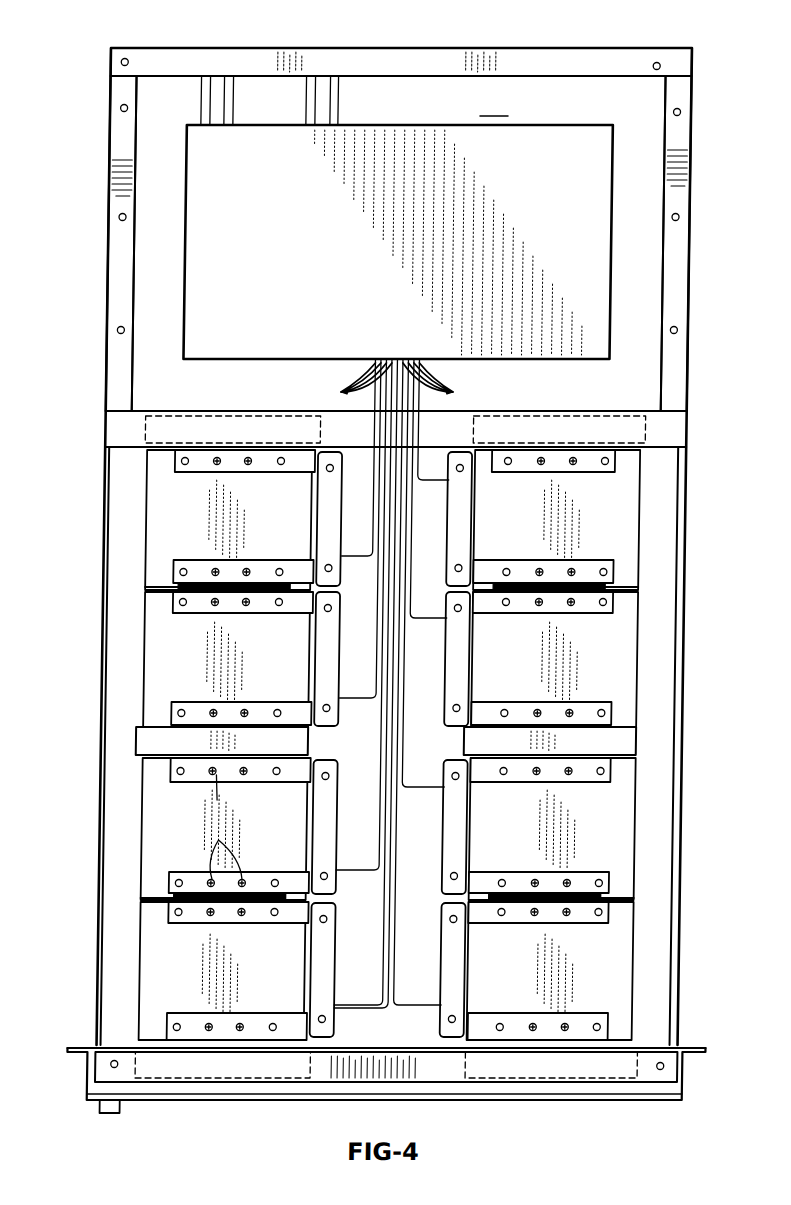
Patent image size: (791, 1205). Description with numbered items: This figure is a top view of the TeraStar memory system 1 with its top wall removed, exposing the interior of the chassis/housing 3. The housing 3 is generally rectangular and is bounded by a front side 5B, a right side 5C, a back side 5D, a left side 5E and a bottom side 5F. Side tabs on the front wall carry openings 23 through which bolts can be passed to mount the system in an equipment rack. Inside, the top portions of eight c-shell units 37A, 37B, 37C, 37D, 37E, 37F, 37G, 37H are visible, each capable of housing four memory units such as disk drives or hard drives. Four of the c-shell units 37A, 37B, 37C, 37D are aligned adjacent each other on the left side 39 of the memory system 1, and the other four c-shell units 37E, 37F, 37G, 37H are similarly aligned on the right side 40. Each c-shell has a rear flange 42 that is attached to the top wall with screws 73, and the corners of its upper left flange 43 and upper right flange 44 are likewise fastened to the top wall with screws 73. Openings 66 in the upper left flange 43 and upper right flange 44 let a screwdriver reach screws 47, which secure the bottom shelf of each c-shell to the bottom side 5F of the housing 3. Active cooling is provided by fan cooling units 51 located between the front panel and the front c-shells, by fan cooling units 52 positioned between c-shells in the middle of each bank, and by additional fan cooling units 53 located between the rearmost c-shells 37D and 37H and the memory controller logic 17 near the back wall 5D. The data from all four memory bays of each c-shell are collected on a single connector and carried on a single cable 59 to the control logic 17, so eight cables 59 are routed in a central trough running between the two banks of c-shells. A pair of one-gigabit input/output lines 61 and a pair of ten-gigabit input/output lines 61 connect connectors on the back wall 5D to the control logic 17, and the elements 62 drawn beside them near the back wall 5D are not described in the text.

The TeraStar memory system 1 is at (602, 1124).
The chassis/housing 3 is at (640, 48).
The front side 5B is at (162, 1105).
The right side 5C is at (688, 268).
The back side 5D is at (549, 48).
The left side 5E is at (103, 180).
The bottom side 5F is at (493, 103).
The memory controller logic 17 is at (220, 268).
The openings 23 is at (641, 1102).
The c-shell unit 37A is at (178, 971).
The c-shell unit 37B is at (178, 828).
The c-shell unit 37C is at (178, 659).
The c-shell unit 37D is at (178, 518).
The c-shell unit 37E is at (618, 973).
The c-shell unit 37F is at (618, 827).
The c-shell unit 37G is at (618, 661).
The c-shell unit 37H is at (618, 520).
The left side 39 is at (74, 1048).
The right side 40 is at (702, 1048).
The rear flange 42 is at (320, 974).
The upper left flange 43 is at (197, 924).
The upper right flange 44 is at (197, 1018).
The screws 47 is at (249, 709).
The fan cooling units 51 is at (555, 1070).
The fan cooling units 52 is at (640, 742).
The fan cooling units 53 is at (576, 433).
The cable 59 is at (391, 684).
The input/output I/O lines 61 is at (225, 93).
The support post 62 is at (333, 99).
The openings 66 is at (222, 827).
The screws 73 is at (604, 457).